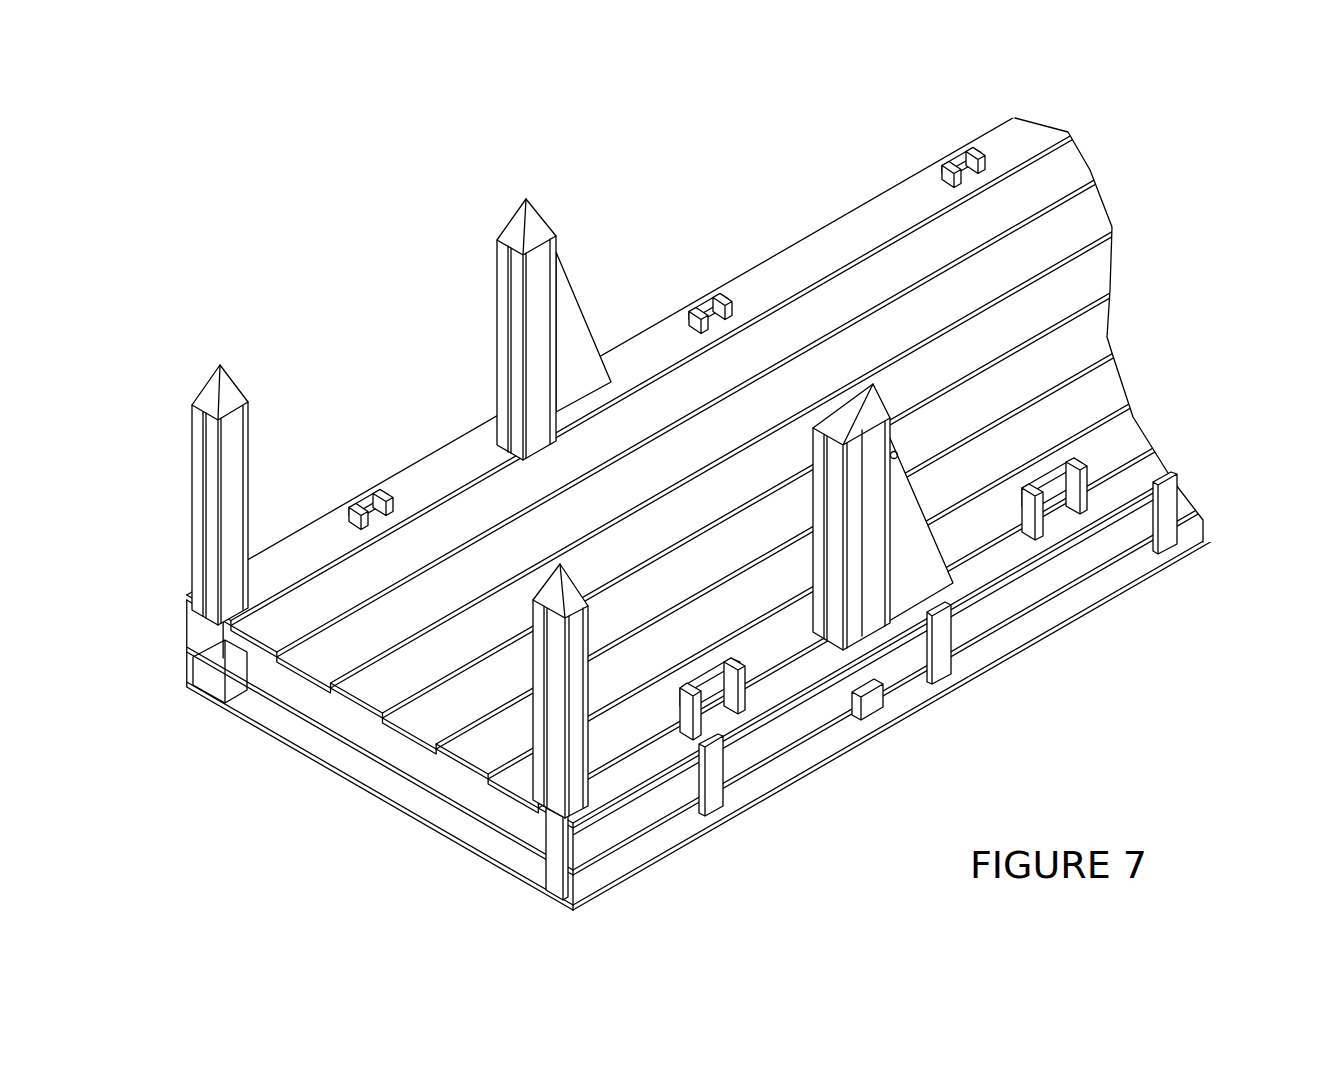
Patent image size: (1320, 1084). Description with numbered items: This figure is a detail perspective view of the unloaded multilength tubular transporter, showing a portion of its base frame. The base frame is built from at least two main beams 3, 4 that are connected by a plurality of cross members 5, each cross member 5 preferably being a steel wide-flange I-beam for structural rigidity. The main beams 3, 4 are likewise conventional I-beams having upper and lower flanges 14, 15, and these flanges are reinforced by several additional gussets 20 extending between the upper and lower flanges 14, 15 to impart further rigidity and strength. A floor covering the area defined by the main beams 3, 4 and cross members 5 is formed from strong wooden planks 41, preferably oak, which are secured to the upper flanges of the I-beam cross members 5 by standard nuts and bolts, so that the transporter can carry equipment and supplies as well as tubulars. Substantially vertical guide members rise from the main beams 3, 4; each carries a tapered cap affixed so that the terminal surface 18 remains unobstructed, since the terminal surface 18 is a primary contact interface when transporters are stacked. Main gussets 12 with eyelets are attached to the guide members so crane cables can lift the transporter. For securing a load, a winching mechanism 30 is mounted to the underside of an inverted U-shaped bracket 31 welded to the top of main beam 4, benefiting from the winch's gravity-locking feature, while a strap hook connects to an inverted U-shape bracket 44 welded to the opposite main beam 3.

The main beam 3 is at (445, 465).
The main beam 4 is at (645, 813).
The cross member 5 is at (388, 763).
The main gusset 12 is at (575, 315).
The upper flange 14 is at (1010, 560).
The lower flange 15 is at (1052, 618).
The terminal surface 18 is at (196, 395).
The gusset 20 is at (935, 648).
The winching mechanism 30 is at (717, 703).
The inverted U-shaped bracket 31 is at (965, 605).
The plank 41 is at (920, 262).
The inverted U-shape bracket 44 is at (712, 288).